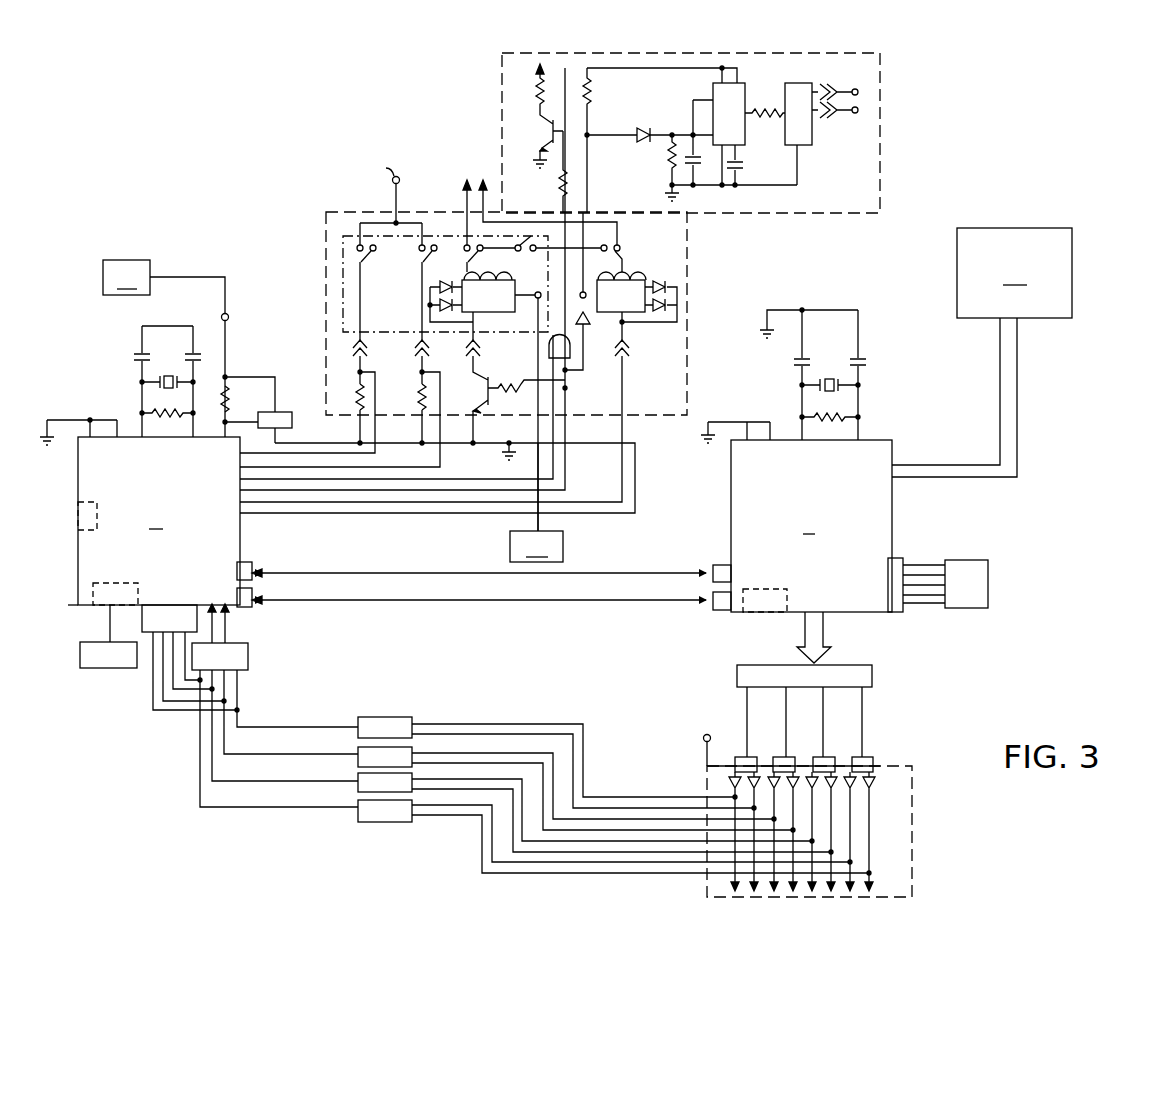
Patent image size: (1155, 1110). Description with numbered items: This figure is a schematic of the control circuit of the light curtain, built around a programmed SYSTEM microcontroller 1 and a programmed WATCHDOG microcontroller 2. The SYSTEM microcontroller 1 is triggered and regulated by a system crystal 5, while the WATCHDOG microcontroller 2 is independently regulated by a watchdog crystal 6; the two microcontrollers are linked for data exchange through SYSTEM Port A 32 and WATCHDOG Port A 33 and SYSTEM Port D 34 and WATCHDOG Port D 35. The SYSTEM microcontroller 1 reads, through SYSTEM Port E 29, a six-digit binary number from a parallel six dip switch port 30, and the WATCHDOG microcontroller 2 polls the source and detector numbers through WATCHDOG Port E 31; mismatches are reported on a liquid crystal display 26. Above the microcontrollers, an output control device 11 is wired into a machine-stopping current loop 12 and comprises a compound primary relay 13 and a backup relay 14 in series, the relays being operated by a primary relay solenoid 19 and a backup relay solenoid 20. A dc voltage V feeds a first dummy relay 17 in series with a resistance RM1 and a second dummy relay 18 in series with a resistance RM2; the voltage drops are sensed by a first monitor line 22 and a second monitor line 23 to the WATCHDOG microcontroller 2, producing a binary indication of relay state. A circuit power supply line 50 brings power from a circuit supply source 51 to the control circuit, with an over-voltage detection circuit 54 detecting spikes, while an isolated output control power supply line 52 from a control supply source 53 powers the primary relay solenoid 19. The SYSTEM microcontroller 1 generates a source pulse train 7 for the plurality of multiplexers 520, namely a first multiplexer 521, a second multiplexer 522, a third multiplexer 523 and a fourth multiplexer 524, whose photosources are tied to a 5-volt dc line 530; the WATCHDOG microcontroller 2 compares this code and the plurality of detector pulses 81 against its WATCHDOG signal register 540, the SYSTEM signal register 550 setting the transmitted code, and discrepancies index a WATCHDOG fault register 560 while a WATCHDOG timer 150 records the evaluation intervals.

The SYSTEM microcontroller 1 is at (811, 526).
The WATCHDOG microcontroller 2 is at (159, 521).
The system crystal 5 is at (835, 346).
The watchdog crystal 6 is at (180, 328).
The source pulse train 7 is at (818, 634).
The output control device 11 is at (330, 208).
The machine-stopping current loop 12 is at (500, 93).
The compound primary relay 13 is at (325, 258).
The backup relay 14 is at (628, 258).
The first dummy relay 17 is at (367, 240).
The second dummy relay 18 is at (430, 240).
The primary relay solenoid 19 is at (497, 305).
The backup relay solenoid 20 is at (640, 305).
The first monitor line 22 is at (377, 401).
The second monitor line 23 is at (441, 391).
The liquid crystal display 26 is at (982, 352).
The SYSTEM Port E 29 is at (896, 612).
The parallel six dip switch port 30 is at (970, 606).
The WATCHDOG Port E 31 is at (150, 621).
The SYSTEM Port A 32 is at (727, 565).
The WATCHDOG Port A 33 is at (247, 563).
The SYSTEM Port D 34 is at (716, 612).
The WATCHDOG Port D 35 is at (250, 607).
The circuit power supply line 50 is at (204, 276).
The circuit supply source 51 is at (126, 277).
The output control power supply line 52 is at (535, 520).
The control supply source 53 is at (536, 546).
The over-voltage detection circuit 54 is at (292, 421).
The plurality of detector pulses 81 is at (766, 793).
The WATCHDOG timer 150 is at (86, 503).
The plurality of multiplexers 520 is at (873, 676).
The first multiplexer 521 is at (745, 757).
The second multiplexer 522 is at (783, 758).
The third multiplexer 523 is at (827, 758).
The fourth multiplexer 524 is at (862, 758).
The 5-volt dc line 530 is at (703, 748).
The WATCHDOG signal register 540 is at (110, 585).
The SYSTEM signal register 550 is at (755, 590).
The WATCHDOG fault register 560 is at (122, 662).
The resistance RM1 is at (352, 385).
The resistance RM2 is at (400, 397).
The dc voltage V is at (391, 201).